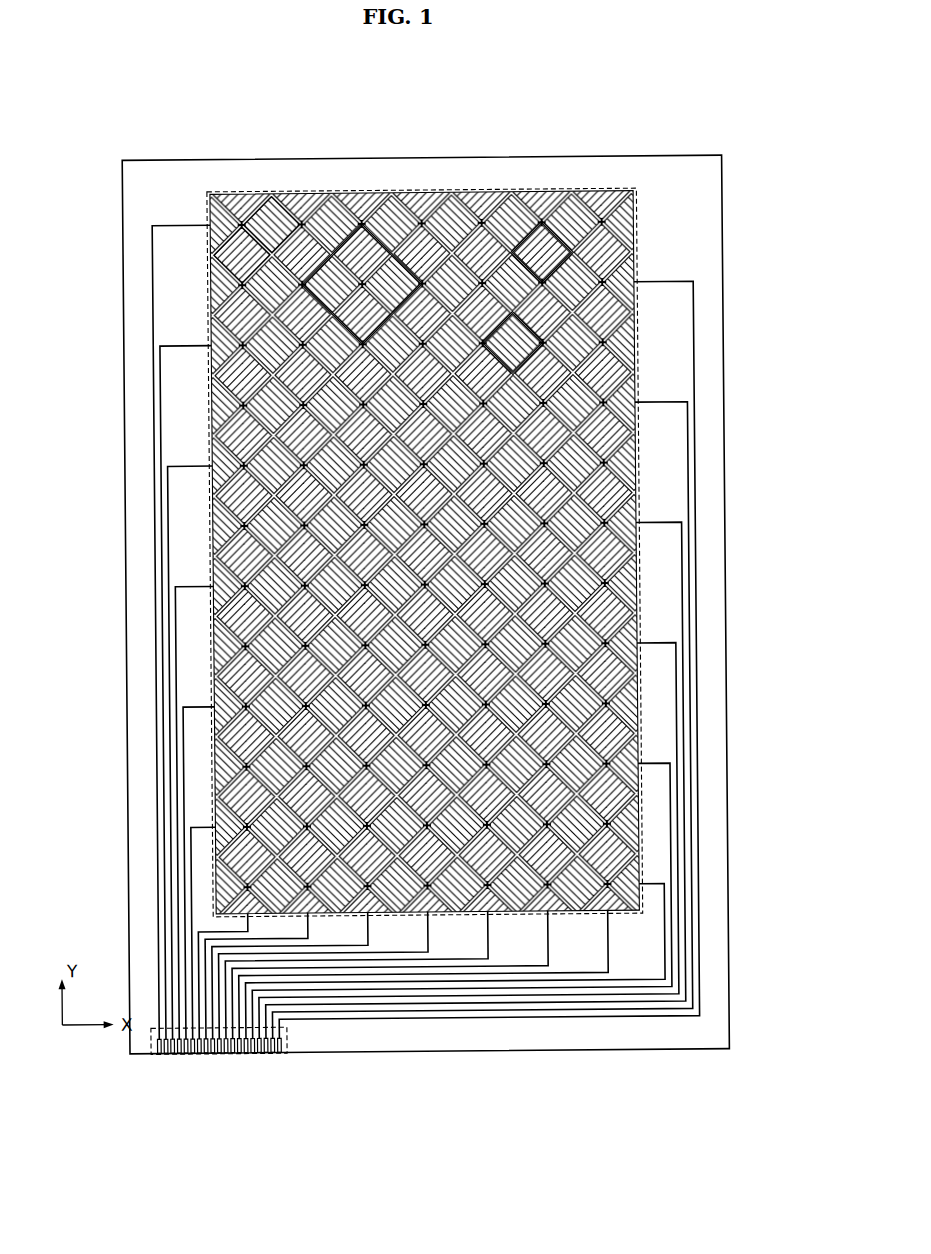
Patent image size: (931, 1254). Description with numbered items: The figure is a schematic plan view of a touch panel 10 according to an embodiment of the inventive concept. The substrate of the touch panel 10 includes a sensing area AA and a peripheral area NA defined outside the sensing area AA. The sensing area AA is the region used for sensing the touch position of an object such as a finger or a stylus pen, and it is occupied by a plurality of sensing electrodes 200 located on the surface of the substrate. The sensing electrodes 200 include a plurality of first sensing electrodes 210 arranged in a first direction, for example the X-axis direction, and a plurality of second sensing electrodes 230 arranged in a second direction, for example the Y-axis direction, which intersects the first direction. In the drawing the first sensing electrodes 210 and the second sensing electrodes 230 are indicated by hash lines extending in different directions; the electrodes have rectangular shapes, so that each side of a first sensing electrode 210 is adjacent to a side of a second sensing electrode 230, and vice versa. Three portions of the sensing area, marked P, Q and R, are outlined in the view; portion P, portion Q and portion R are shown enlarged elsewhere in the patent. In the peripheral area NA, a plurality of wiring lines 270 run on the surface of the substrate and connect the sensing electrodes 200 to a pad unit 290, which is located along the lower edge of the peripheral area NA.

The touch panel 10 is at (435, 104).
The peripheral area NA is at (159, 177).
The sensing area AA is at (575, 190).
The sensing electrodes 200 is at (292, 111).
The first sensing electrodes 210 is at (272, 214).
The second sensing electrodes 230 is at (239, 242).
The portion R is at (384, 224).
The portion Q is at (577, 231).
The portion P is at (547, 318).
The wiring lines 270 is at (155, 281).
The pad unit 290 is at (284, 1040).